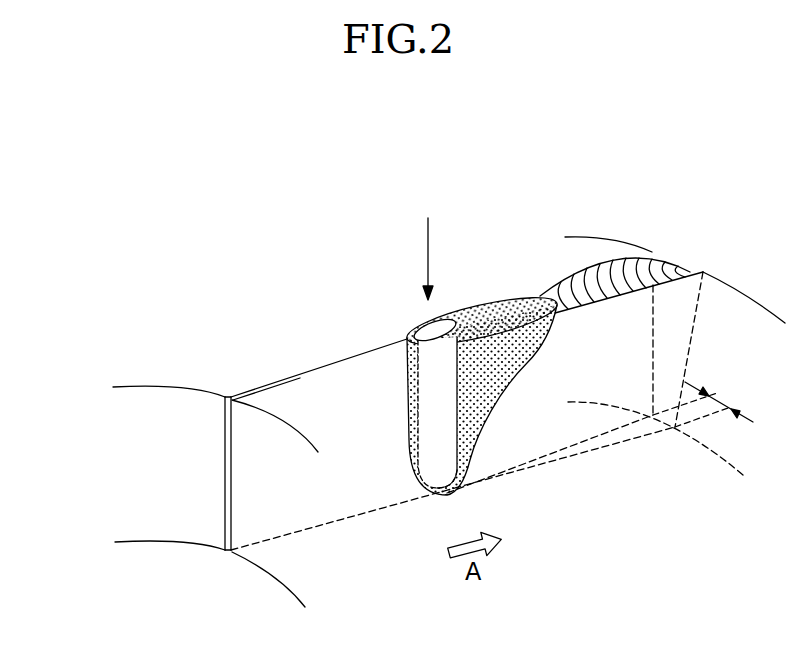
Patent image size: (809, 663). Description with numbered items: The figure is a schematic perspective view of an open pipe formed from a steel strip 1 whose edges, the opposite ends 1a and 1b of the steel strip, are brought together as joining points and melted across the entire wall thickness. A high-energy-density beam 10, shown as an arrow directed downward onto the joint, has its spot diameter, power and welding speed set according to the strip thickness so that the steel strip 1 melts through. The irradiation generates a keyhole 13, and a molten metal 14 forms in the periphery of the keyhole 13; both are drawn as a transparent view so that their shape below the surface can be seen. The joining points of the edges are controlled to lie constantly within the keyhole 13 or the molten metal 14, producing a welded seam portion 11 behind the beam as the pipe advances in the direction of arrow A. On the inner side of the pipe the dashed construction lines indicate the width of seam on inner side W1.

The steel strip 1 is at (145, 400).
The end of the steel strip 1a is at (245, 390).
The end of the steel strip 1b is at (302, 375).
The high-energy-density beam 10 is at (428, 260).
The seam portion 11 is at (647, 272).
The keyhole 13 is at (448, 500).
The molten metal 14 is at (493, 300).
The width of seam on inner side W1 is at (730, 413).